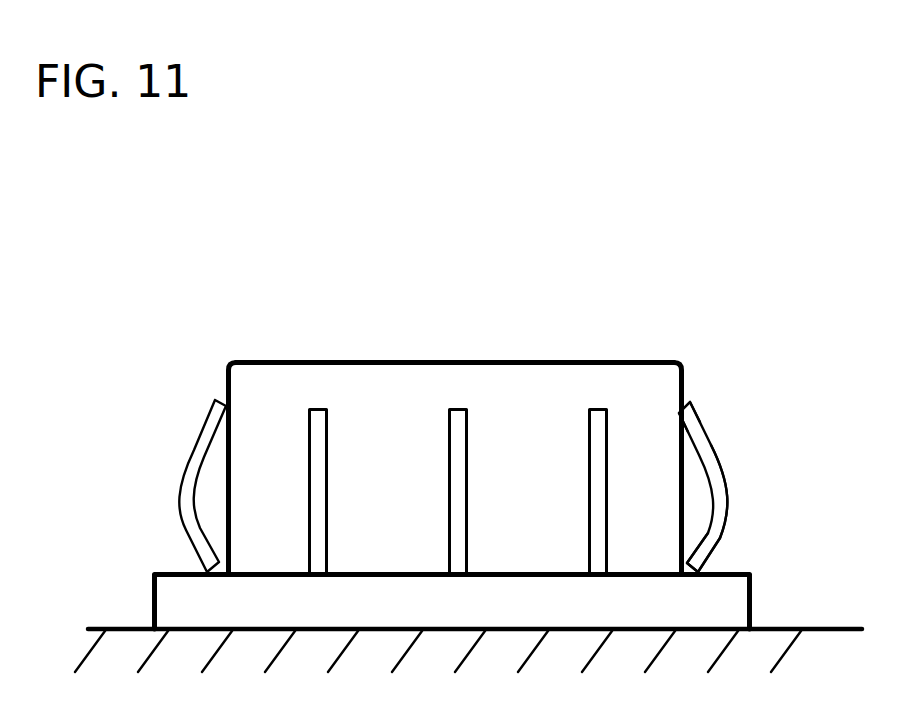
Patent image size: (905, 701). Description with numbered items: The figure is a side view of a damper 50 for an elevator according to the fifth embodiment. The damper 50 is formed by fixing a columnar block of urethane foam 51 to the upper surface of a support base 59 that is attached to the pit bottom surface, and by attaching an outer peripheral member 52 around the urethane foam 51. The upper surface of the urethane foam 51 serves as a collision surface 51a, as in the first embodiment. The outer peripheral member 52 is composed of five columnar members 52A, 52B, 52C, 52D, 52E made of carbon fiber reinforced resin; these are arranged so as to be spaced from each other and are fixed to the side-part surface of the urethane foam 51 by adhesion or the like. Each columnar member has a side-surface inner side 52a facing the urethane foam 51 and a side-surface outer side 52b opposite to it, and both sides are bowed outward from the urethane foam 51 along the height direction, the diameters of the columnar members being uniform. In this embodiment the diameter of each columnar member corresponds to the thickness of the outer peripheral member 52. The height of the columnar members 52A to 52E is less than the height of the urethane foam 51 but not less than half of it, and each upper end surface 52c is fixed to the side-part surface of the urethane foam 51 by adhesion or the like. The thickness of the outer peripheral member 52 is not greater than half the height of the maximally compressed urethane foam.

The damper for elevator 50 is at (460, 130).
The urethane foam 51 is at (268, 517).
The collision surface 51a is at (242, 350).
The outer peripheral member 52 is at (215, 297).
The columnar member 52A is at (230, 386).
The columnar member 52B is at (313, 404).
The columnar member 52C is at (453, 405).
The columnar member 52D is at (594, 408).
The columnar member 52E is at (692, 408).
The side-surface inner side 52a is at (683, 456).
The side-surface outer side 52b is at (717, 552).
The upper end surface 52c is at (677, 413).
The support base 59 is at (173, 600).